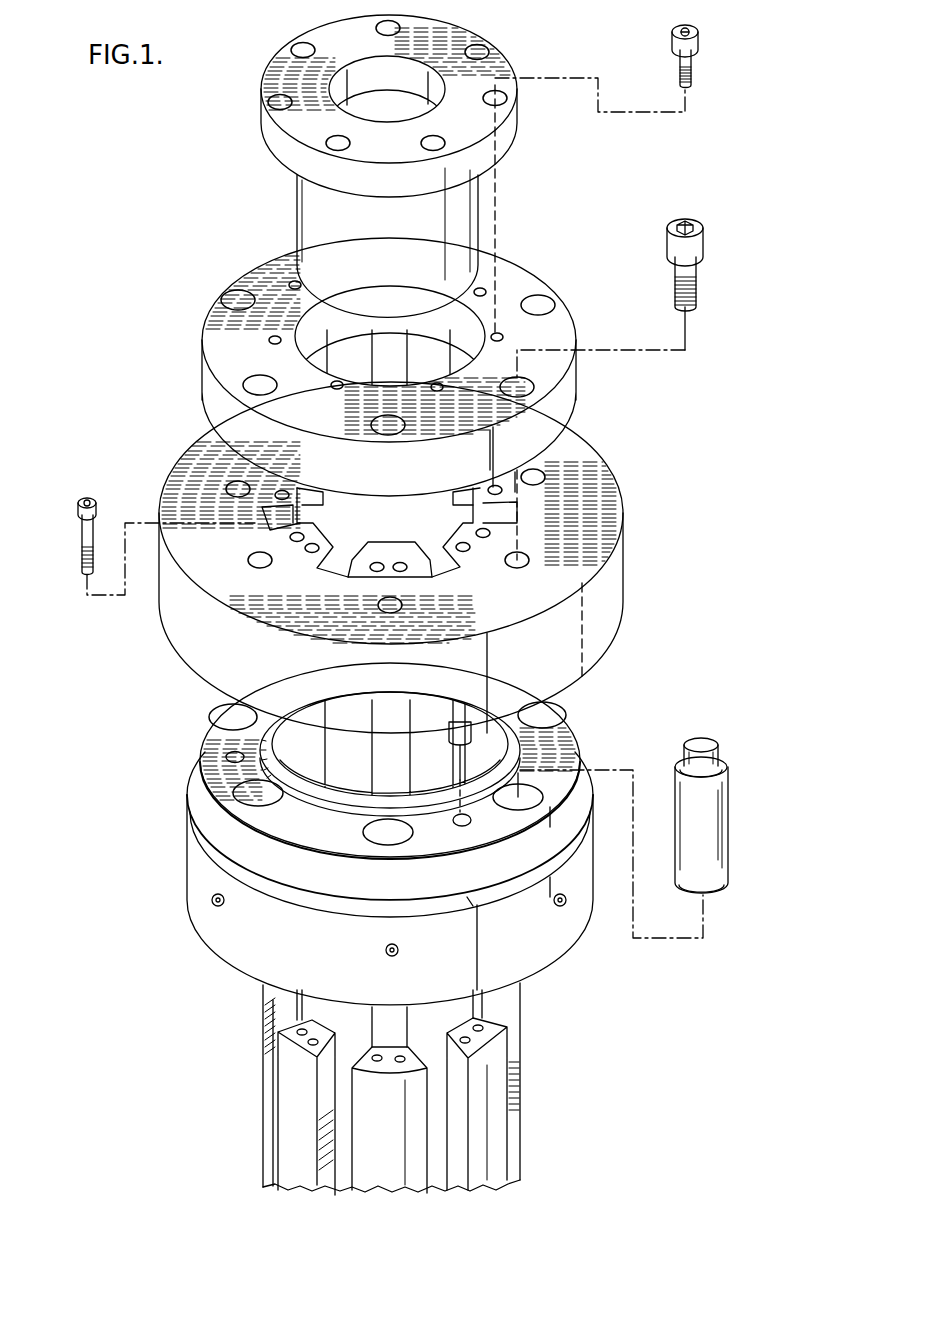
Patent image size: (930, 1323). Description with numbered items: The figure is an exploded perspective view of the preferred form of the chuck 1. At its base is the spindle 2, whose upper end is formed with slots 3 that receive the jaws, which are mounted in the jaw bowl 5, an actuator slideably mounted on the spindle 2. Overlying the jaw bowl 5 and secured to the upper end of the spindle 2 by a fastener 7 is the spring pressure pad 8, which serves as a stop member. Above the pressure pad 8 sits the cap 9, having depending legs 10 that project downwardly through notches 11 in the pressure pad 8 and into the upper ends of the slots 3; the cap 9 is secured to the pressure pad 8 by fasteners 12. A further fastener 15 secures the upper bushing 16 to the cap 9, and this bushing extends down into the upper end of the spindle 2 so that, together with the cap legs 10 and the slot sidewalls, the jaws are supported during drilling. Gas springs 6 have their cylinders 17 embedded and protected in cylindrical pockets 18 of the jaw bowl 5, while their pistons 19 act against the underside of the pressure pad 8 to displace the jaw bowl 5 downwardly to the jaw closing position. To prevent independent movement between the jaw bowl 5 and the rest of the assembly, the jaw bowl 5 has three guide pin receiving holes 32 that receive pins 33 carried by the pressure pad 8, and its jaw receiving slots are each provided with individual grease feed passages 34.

The chuck 1 is at (184, 324).
The spindle 2 is at (530, 1061).
The slots 3 is at (325, 1095).
The jaw bowl 5 is at (184, 848).
The gas springs 6 is at (736, 748).
The fastener 7 is at (78, 520).
The spring pressure pad 8 is at (627, 562).
The cap 9 is at (566, 389).
The depending legs 10 is at (432, 500).
The notches 11 is at (430, 560).
The fasteners 12 is at (702, 262).
The fastener 15 is at (672, 56).
The upper bushing 16 is at (291, 215).
The cylinders 17 is at (722, 812).
The cylindrical pockets 18 is at (368, 832).
The pistons 19 is at (702, 742).
The guide pin receiving holes 32 is at (230, 757).
The pins 33 is at (458, 725).
The grease feed passages 34 is at (208, 906).